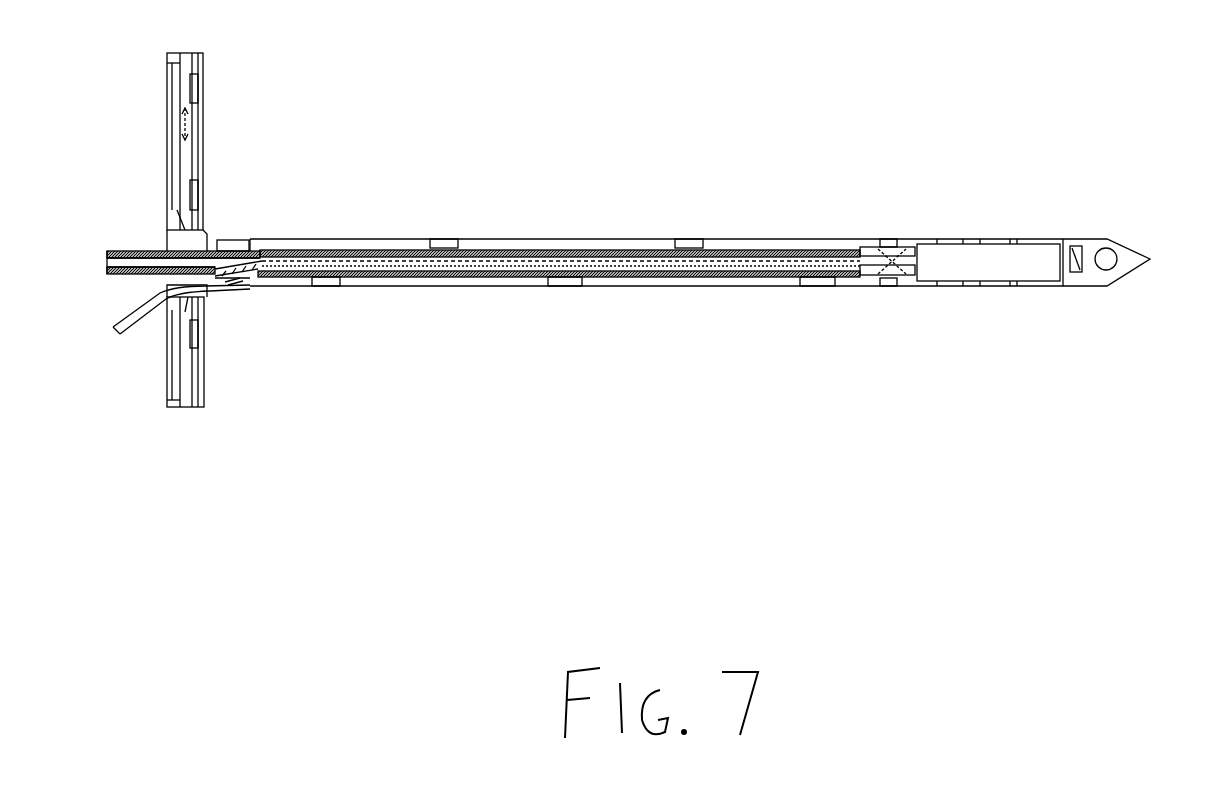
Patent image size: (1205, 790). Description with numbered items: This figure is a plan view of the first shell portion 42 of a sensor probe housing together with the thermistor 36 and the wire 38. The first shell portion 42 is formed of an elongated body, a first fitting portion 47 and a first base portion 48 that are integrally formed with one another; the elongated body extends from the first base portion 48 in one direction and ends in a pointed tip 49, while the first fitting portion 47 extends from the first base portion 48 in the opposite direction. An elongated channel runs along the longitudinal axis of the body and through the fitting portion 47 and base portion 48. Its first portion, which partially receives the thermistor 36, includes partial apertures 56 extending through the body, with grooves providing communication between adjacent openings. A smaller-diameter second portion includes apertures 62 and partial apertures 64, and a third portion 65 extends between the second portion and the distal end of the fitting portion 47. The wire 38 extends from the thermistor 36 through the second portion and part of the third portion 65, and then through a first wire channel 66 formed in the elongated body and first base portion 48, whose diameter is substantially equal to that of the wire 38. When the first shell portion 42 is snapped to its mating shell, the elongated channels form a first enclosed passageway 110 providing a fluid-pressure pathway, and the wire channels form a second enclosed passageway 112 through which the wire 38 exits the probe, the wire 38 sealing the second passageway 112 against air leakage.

The thermistor 36 is at (968, 258).
The wire 38 is at (125, 335).
The first shell portion 42 is at (541, 236).
The first fitting portion 47 is at (117, 251).
The first base portion 48 is at (167, 78).
The pointed tip 49 is at (1138, 240).
The partial apertures 56 is at (997, 239).
The apertures 62 is at (905, 287).
The partial apertures 64 is at (890, 239).
The third portion 65 is at (756, 250).
The first wire channel 66 is at (233, 286).
The first enclosed passageway 110 is at (630, 245).
The second enclosed passageway 112 is at (240, 285).